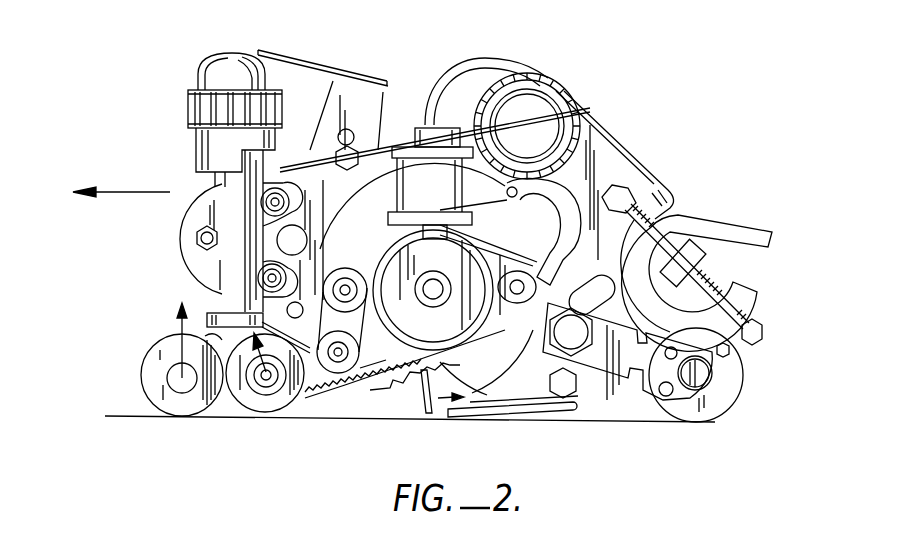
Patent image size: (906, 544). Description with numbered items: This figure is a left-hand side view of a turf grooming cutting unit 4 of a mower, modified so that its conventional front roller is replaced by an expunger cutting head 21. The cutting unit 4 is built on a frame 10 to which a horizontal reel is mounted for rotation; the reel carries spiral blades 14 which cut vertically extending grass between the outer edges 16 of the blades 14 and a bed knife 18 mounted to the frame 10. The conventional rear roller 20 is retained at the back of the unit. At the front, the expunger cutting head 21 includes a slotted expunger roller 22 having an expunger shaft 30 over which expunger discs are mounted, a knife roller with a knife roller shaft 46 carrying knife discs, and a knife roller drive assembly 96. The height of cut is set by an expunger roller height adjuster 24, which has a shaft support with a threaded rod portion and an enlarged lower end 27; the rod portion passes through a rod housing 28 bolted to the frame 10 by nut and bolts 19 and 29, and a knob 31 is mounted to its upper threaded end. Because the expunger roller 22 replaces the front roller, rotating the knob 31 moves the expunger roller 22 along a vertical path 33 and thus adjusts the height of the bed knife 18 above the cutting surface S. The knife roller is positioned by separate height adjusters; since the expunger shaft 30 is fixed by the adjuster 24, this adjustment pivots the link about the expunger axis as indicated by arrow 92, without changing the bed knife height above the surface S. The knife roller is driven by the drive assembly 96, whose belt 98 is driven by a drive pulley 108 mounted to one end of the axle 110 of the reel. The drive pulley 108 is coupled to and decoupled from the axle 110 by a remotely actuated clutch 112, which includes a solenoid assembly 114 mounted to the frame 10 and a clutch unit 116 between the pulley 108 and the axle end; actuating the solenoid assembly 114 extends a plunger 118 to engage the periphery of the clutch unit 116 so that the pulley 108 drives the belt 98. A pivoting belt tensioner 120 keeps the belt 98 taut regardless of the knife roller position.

The cutting unit 4 is at (700, 104).
The frame 10 is at (608, 113).
The spiral blades 14 is at (426, 412).
The outer edges 16 is at (434, 414).
The bed knife 18 is at (447, 423).
The nut and bolt 19 is at (196, 238).
The rear roller 20 is at (712, 425).
The expunger cutting head 21 is at (170, 264).
The expunger roller 22 is at (132, 394).
The expunger roller height adjuster 24 is at (185, 152).
The enlarged lower end 27 is at (185, 410).
The rod housing 28 is at (200, 216).
The nut and bolt 29 is at (290, 200).
The expunger shaft 30 is at (170, 370).
The knob 31 is at (228, 78).
The vertical path 33 is at (180, 333).
The knife roller shaft 46 is at (304, 385).
The arrow 92 is at (266, 385).
The knife roller drive assembly 96 is at (372, 390).
The belt 98 is at (357, 380).
The drive pulley 108 is at (500, 400).
The axle 110 is at (437, 290).
The remotely actuated clutch 112 is at (406, 125).
The solenoid assembly 114 is at (458, 150).
The clutch unit 116 is at (449, 332).
The plunger 118 is at (488, 165).
The pivoting belt tensioner 120 is at (364, 322).
The cutting surface S is at (112, 416).